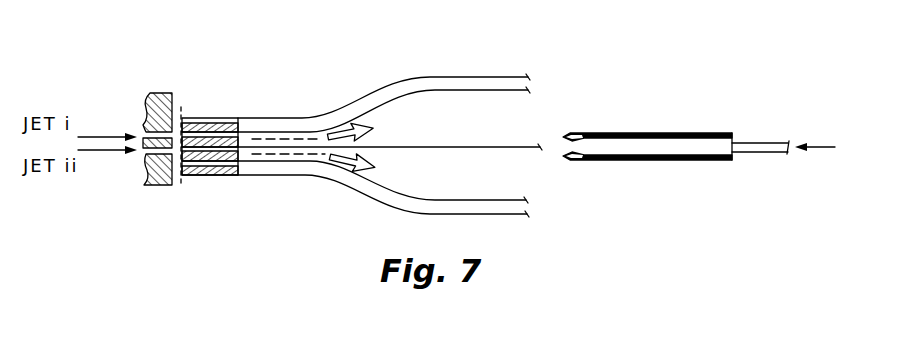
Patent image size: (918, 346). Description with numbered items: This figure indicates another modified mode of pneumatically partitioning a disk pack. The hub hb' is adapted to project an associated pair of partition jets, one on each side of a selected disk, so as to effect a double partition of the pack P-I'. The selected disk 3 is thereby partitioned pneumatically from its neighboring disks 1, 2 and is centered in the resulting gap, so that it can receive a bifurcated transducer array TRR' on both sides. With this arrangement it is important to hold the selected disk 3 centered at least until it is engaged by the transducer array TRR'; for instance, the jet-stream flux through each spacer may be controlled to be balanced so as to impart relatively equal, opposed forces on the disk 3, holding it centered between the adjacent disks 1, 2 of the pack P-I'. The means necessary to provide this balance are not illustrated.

The disk 1 is at (511, 74).
The disk 2 is at (467, 90).
The selected disk 3 is at (515, 108).
The hub hb' is at (143, 121).
The pack P-I' is at (591, 60).
The bifurcated transducer array TRR' is at (699, 165).